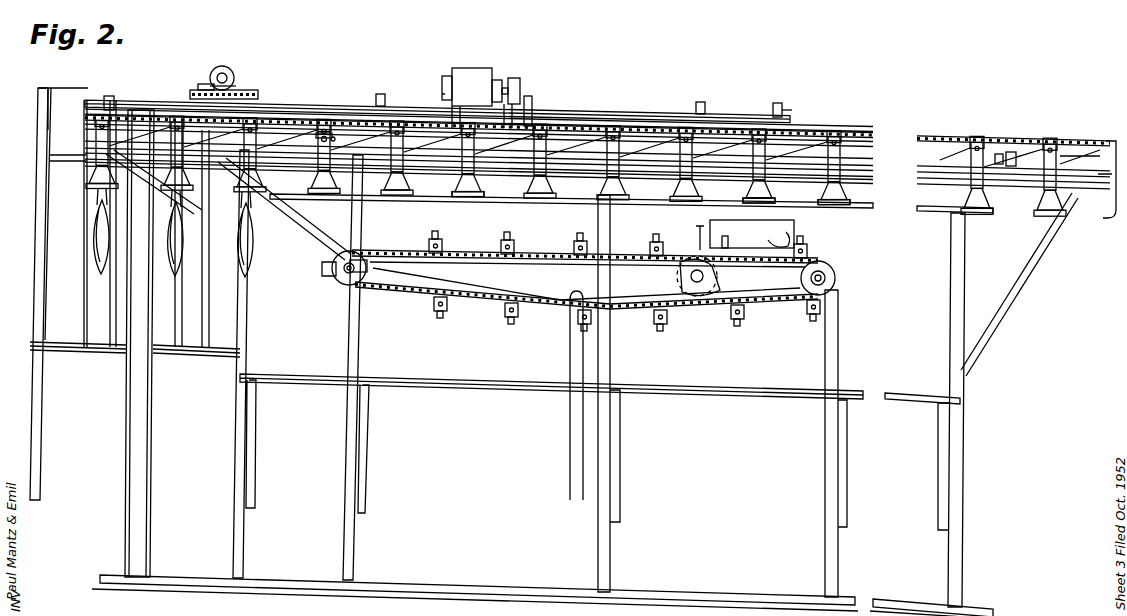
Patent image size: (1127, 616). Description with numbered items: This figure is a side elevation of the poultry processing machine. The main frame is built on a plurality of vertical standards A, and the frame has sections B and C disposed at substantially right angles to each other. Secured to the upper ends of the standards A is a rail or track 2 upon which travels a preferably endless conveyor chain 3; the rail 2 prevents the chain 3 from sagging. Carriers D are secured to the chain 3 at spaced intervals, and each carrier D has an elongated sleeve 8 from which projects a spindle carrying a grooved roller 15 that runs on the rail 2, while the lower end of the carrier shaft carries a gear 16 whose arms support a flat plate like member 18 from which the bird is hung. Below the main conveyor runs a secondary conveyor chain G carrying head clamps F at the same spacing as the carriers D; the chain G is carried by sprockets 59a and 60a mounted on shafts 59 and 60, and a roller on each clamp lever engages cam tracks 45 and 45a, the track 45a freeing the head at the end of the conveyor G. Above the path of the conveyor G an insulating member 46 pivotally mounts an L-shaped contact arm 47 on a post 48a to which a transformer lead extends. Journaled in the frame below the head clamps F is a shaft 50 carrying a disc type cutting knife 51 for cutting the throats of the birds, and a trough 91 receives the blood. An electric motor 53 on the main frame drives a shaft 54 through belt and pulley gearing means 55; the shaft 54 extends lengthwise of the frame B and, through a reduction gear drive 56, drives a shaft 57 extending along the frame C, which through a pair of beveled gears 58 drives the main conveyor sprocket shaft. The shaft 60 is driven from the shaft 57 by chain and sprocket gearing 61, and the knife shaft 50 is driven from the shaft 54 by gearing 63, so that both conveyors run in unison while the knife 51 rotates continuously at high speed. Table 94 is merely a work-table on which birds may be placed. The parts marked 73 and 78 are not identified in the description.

The rail or track 2 is at (422, 160).
The conveyor chain 3 is at (341, 118).
The elongated sleeve 8 is at (340, 139).
The grooved roller 15 is at (344, 138).
The gear 16 is at (774, 181).
The flat plate like member 18 is at (457, 198).
The cam track 45 is at (695, 240).
The cam track 45a is at (322, 266).
The insulating member 46 is at (795, 232).
The contact arm 47 is at (768, 240).
The post 48a is at (795, 235).
The shaft 50 is at (688, 278).
The disc type cutting knife 51 is at (708, 276).
The electric motor 53 is at (472, 70).
The shaft 54 is at (746, 121).
The belt and pulley gearing means 55 is at (517, 100).
The reduction gear drive 56 is at (232, 70).
The shaft 57 is at (214, 81).
The beveled gears 58 is at (240, 86).
The shaft 59 is at (341, 291).
The sprocket 59a is at (322, 280).
The shaft 60 is at (835, 277).
The sprocket 60a is at (836, 290).
The chain and sprocket gearing 61 is at (305, 217).
The gearing 63 is at (703, 110).
The cross beam 73 is at (170, 337).
The upright post 78 is at (195, 324).
The trough 91 is at (554, 296).
The work-table 94 is at (481, 386).
The vertical standards A is at (152, 534).
The frame B is at (565, 112).
The frame C is at (32, 209).
The carriers D is at (92, 175).
The head clamp F is at (575, 245).
The secondary conveyor chain G is at (407, 290).